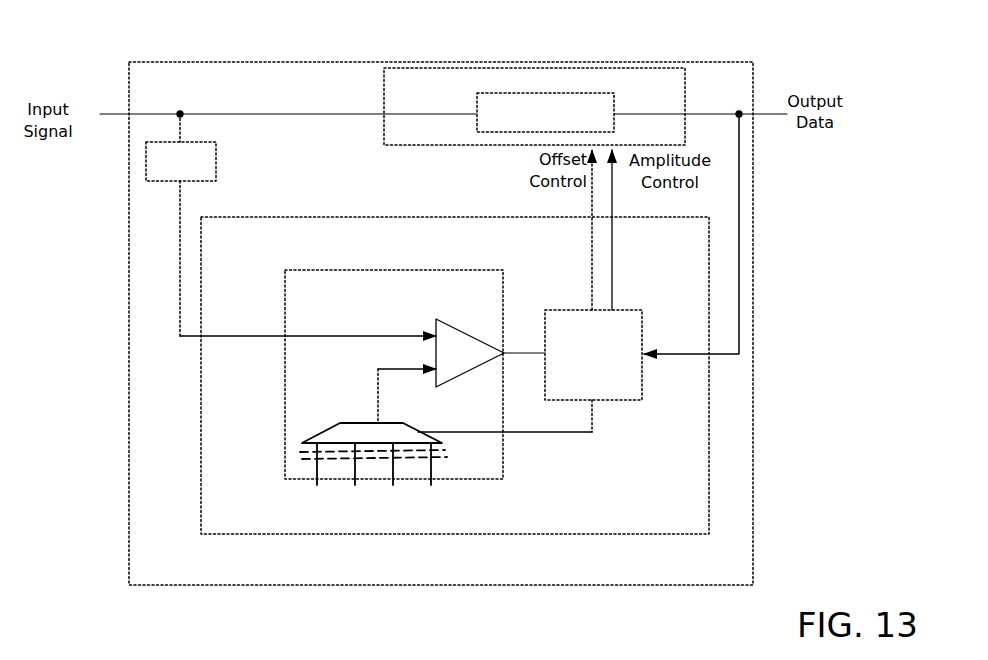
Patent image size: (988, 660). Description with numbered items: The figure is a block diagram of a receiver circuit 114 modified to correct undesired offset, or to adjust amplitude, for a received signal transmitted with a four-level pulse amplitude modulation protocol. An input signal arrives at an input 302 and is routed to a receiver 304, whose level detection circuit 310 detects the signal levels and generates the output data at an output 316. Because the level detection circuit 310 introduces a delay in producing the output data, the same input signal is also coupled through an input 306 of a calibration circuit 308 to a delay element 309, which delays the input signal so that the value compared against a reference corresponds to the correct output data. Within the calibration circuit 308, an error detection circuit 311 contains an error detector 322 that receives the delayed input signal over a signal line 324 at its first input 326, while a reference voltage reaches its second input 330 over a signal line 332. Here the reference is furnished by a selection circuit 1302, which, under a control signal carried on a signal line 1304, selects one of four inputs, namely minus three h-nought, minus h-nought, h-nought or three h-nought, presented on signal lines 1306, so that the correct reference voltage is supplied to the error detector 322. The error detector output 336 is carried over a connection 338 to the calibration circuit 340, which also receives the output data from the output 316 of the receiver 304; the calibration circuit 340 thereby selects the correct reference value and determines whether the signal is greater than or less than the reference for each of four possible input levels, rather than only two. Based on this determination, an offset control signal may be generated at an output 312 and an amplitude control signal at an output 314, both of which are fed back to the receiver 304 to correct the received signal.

The receiver circuit 114 is at (756, 78).
The input 302 is at (129, 110).
The receiver 304 is at (658, 68).
The input 306 is at (200, 343).
The calibration circuit 308 is at (672, 217).
The delay element 309 is at (217, 153).
The level detection circuit 310 is at (477, 104).
The error detection circuit 311 is at (432, 270).
The output 312 is at (590, 218).
The output 314 is at (613, 218).
The output 316 is at (686, 116).
The error detector 322 is at (452, 326).
The signal line 324 is at (368, 335).
The first input 326 is at (432, 332).
The second input 330 is at (422, 378).
The signal line 332 is at (386, 370).
The amplifier output 336 is at (507, 348).
The output connection 338 is at (540, 360).
The calibration circuit 340 is at (645, 331).
The selection circuit 1302 is at (420, 423).
The signal line 1304 is at (430, 432).
The signal lines 1306 is at (433, 450).